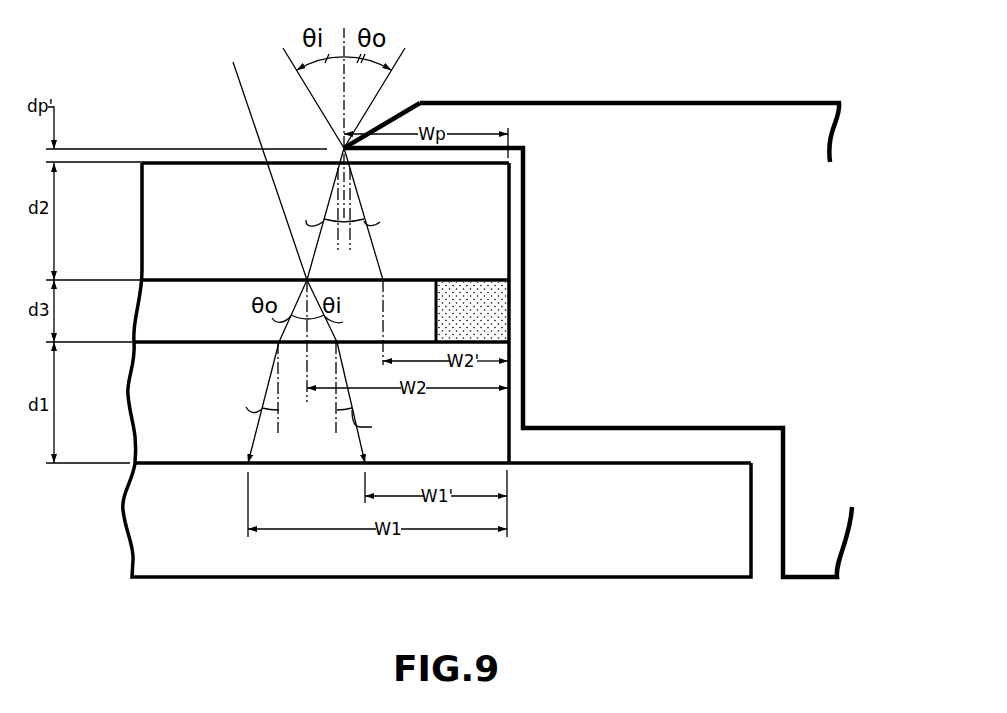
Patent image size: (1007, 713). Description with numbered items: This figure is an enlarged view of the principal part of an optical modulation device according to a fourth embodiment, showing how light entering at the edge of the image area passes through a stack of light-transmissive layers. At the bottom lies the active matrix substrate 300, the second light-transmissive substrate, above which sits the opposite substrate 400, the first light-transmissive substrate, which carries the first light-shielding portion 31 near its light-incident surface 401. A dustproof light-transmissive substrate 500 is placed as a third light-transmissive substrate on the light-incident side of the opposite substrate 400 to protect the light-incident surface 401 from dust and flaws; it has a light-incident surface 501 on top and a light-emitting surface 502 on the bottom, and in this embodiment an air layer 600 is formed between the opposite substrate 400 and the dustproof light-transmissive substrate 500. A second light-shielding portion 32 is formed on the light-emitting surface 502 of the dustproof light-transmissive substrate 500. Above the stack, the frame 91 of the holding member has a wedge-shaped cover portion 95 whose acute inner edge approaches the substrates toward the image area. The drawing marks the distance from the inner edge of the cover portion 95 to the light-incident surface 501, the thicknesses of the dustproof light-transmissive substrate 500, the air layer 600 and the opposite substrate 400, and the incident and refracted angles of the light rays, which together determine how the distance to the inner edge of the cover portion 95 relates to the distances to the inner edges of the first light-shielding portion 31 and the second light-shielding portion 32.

The frame 91 is at (737, 114).
The cover portion 95 is at (408, 113).
The light-incident surface of the dustproof light-transmissive substrate 501 is at (229, 161).
The dustproof light-transmissive substrate 500 is at (158, 213).
The light-emitting surface of the dustproof light-transmissive substrate 502 is at (200, 283).
The air layer 600 is at (129, 300).
The light-incident surface of the opposite substrate 401 is at (244, 340).
The opposite substrate 400 is at (144, 393).
The active matrix substrate 300 is at (173, 562).
The second light-shielding portion 32 is at (372, 277).
The first light-shielding portion 31 is at (283, 462).